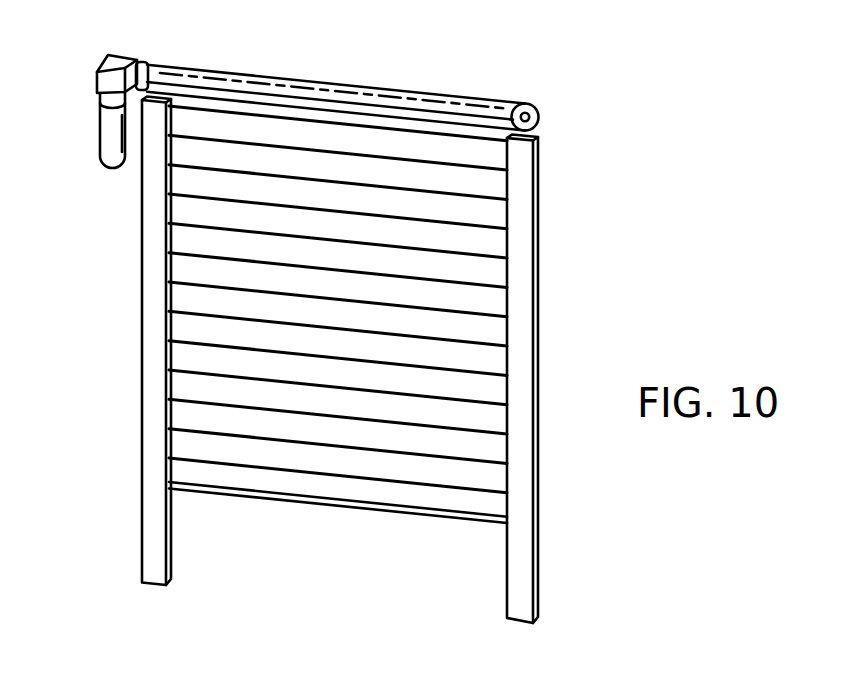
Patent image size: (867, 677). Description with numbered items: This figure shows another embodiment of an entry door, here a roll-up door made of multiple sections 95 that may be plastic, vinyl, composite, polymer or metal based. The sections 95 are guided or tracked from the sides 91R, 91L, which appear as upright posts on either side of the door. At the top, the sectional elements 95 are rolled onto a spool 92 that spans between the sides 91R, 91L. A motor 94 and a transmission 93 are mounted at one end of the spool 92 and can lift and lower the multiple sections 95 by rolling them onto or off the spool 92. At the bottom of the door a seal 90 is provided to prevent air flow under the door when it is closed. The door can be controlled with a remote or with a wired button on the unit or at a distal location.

The seal 90 is at (447, 518).
The left side 91L is at (140, 408).
The right side 91R is at (542, 407).
The spool 92 is at (510, 102).
The transmission 93 is at (118, 56).
The motor 94 is at (100, 125).
The sections 95 is at (485, 287).